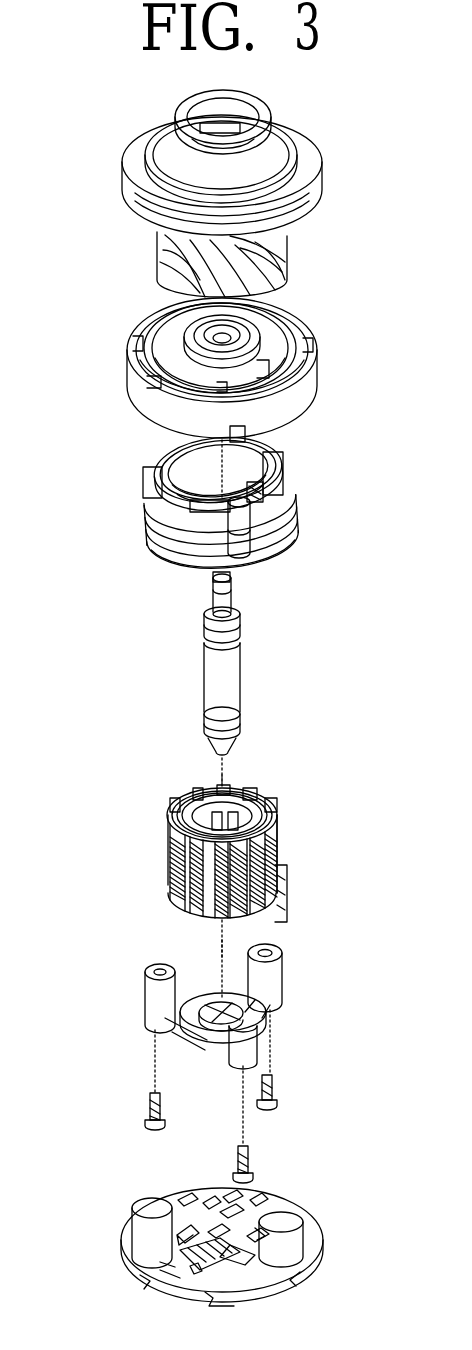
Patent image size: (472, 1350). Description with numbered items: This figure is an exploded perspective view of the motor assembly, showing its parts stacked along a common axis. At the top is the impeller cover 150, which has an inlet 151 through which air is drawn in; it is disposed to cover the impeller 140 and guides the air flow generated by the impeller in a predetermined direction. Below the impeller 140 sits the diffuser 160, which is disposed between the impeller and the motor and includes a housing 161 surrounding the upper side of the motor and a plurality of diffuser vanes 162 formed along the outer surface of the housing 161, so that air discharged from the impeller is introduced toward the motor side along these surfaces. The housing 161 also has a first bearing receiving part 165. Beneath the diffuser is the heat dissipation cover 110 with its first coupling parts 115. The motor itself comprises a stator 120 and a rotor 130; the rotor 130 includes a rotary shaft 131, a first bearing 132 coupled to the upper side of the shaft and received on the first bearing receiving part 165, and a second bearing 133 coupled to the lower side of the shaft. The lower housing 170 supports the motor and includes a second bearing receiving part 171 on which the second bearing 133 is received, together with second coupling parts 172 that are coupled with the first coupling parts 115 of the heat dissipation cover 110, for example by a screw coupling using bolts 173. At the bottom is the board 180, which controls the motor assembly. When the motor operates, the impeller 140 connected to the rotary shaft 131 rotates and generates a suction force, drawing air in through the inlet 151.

The heat dissipation cover 110 is at (195, 504).
The first coupling parts 115 is at (250, 540).
The stator 120 is at (132, 843).
The rotor 130 is at (173, 679).
The rotary shaft 131 is at (233, 594).
The first bearing 132 is at (241, 630).
The second bearing 133 is at (241, 722).
The impeller 140 is at (134, 250).
The impeller cover 150 is at (187, 159).
The inlet 151 is at (250, 104).
The diffuser 160 is at (207, 368).
The housing 161 is at (280, 358).
The diffuser vanes 162 is at (316, 350).
The first bearing receiving part 165 is at (312, 327).
The housing 170 is at (195, 1061).
The second bearing receiving part 171 is at (268, 1012).
The second coupling parts 172 is at (284, 958).
The bolts 173 is at (255, 1104).
The board 180 is at (110, 1226).